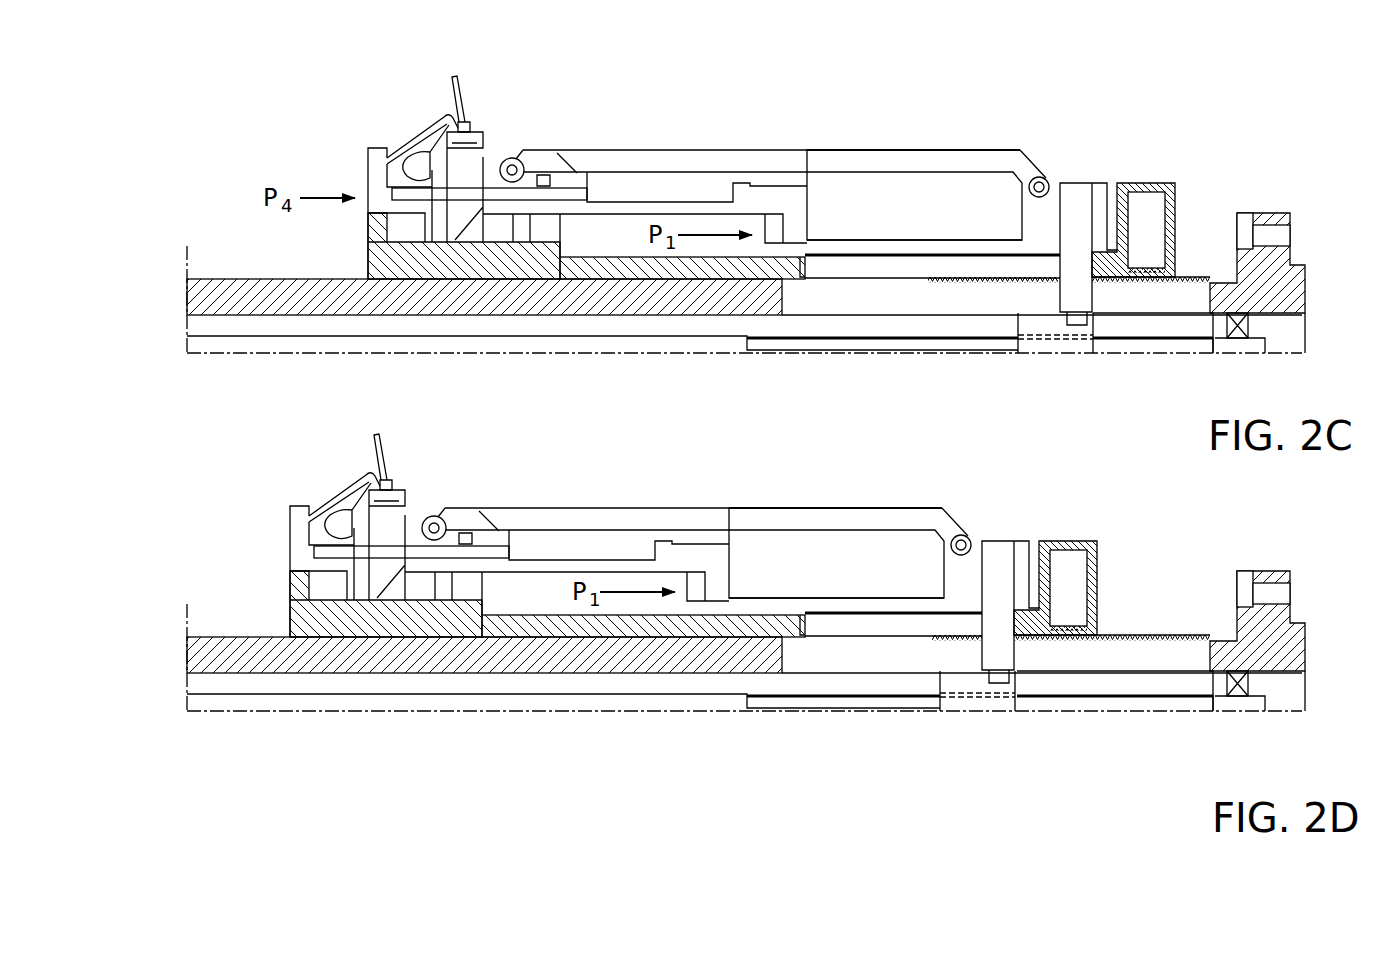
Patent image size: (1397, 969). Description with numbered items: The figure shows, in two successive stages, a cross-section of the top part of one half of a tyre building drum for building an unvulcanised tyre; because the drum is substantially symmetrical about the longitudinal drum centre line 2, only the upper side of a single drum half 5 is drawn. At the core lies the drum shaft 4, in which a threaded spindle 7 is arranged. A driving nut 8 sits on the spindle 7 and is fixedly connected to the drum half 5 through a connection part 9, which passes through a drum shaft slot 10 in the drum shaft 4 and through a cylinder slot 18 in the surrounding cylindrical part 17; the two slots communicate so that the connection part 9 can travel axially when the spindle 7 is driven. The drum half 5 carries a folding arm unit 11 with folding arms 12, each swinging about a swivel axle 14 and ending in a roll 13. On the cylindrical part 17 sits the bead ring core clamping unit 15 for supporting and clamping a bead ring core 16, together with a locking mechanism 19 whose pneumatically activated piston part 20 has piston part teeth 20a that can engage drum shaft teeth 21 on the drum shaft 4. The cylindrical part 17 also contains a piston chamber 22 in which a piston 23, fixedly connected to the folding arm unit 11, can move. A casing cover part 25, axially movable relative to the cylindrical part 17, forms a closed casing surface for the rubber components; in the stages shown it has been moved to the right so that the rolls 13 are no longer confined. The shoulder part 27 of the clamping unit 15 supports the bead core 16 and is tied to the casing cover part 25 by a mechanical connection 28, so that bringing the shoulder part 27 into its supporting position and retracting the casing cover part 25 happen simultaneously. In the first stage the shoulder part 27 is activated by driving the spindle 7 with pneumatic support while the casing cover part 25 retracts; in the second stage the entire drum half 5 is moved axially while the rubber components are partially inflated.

In FIG. 2C, the longitudinal drum centre line 2 is at (1283, 355).
In FIG. 2D, the longitudinal drum centre line 2 is at (1283, 713).
In FIG. 2C, the drum shaft 4 is at (187, 298).
In FIG. 2C, the drum half 5 is at (1031, 130).
In FIG. 2D, the drum half 5 is at (950, 490).
In FIG. 2C, the threaded spindle 7 is at (187, 350).
In FIG. 2C, the driving nut 8 is at (1048, 336).
In FIG. 2D, the driving nut 8 is at (975, 695).
In FIG. 2C, the connection part 9 is at (1068, 293).
In FIG. 2D, the connection part 9 is at (990, 651).
In FIG. 2C, the drum shaft slot 10 is at (830, 300).
In FIG. 2D, the drum shaft slot 10 is at (822, 658).
In FIG. 2C, the folding arm unit 11 is at (843, 148).
In FIG. 2D, the folding arm unit 11 is at (753, 508).
In FIG. 2C, the folding arm 12 is at (925, 150).
In FIG. 2D, the folding arm 12 is at (847, 508).
In FIG. 2C, the roll 13 is at (507, 158).
In FIG. 2D, the roll 13 is at (429, 516).
In FIG. 2C, the swivel axle 14 is at (1046, 180).
In FIG. 2D, the swivel axle 14 is at (968, 538).
In FIG. 2C, the bead ring core clamping unit 15 is at (397, 113).
In FIG. 2D, the bead ring core clamping unit 15 is at (338, 457).
In FIG. 2C, the bead ring core 16 is at (464, 100).
In FIG. 2D, the bead ring core 16 is at (386, 460).
In FIG. 2C, the cylindrical part 17 is at (380, 263).
In FIG. 2D, the cylindrical part 17 is at (302, 621).
In FIG. 2C, the cylinder slot 18 is at (870, 265).
In FIG. 2D, the cylinder slot 18 is at (862, 623).
In FIG. 2C, the locking mechanism 19 is at (1175, 180).
In FIG. 2D, the locking mechanism 19 is at (1097, 538).
In FIG. 2C, the piston part 20 is at (1157, 208).
In FIG. 2D, the piston part 20 is at (1079, 566).
In FIG. 2C, the piston part teeth 20a is at (1152, 268).
In FIG. 2D, the piston part teeth 20a is at (1072, 626).
In FIG. 2C, the drum shaft teeth 21 is at (1243, 213).
In FIG. 2D, the drum shaft teeth 21 is at (1160, 635).
In FIG. 2C, the piston chamber 22 is at (575, 236).
In FIG. 2D, the piston chamber 22 is at (497, 594).
In FIG. 2C, the piston 23 is at (763, 246).
In FIG. 2D, the piston 23 is at (685, 604).
In FIG. 2C, the casing cover part 25 is at (662, 150).
In FIG. 2D, the casing cover part 25 is at (572, 508).
In FIG. 2C, the shoulder part 27 is at (395, 185).
In FIG. 2D, the shoulder part 27 is at (317, 543).
In FIG. 2C, the mechanical connection 28 is at (497, 200).
In FIG. 2D, the mechanical connection 28 is at (419, 558).